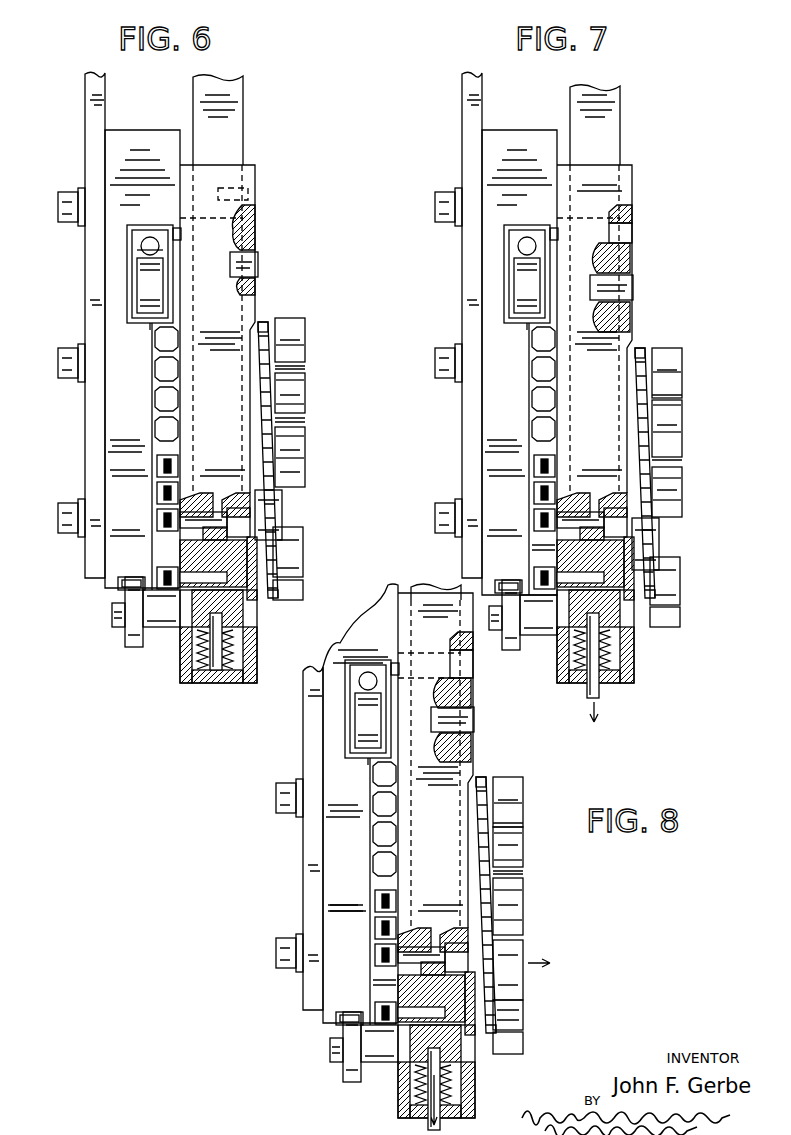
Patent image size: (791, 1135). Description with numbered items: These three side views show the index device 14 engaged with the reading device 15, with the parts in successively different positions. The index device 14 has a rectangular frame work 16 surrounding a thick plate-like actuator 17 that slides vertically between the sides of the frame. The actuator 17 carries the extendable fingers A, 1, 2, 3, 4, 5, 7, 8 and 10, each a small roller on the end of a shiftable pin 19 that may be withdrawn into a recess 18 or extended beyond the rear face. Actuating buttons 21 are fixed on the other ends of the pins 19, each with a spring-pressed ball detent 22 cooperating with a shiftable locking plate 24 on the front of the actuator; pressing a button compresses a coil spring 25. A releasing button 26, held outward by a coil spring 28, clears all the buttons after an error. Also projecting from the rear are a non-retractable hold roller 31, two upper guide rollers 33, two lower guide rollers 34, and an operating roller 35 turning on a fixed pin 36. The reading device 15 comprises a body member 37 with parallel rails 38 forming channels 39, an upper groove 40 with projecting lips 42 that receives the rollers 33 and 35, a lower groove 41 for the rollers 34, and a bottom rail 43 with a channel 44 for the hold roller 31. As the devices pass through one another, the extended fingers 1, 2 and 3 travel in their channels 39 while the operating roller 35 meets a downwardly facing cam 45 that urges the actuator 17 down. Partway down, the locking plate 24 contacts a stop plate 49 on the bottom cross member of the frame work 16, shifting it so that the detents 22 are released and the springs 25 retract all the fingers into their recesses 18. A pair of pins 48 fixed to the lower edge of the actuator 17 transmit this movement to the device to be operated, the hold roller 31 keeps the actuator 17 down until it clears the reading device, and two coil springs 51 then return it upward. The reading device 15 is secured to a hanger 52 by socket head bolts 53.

In FIG. 6, the extendable finger 1 is at (157, 521).
In FIG. 7, the extendable finger 1 is at (610, 539).
In FIG. 8, the extendable finger 1 is at (462, 970).
In FIG. 6, the extendable finger 2 is at (155, 490).
In FIG. 7, the extendable finger 2 is at (603, 505).
In FIG. 8, the extendable finger 2 is at (460, 935).
In FIG. 6, the extendable finger 3 is at (155, 464).
In FIG. 7, the extendable finger 3 is at (603, 483).
In FIG. 8, the extendable finger 3 is at (385, 901).
In FIG. 6, the extendable finger 4 is at (302, 458).
In FIG. 7, the extendable finger 4 is at (679, 486).
In FIG. 8, the extendable finger 4 is at (519, 917).
In FIG. 6, the extendable finger 5 is at (302, 436).
In FIG. 7, the extendable finger 5 is at (679, 462).
In FIG. 8, the extendable finger 5 is at (519, 885).
In FIG. 6, the extendable finger 7 is at (302, 405).
In FIG. 7, the extendable finger 7 is at (678, 428).
In FIG. 8, the extendable finger 7 is at (519, 858).
In FIG. 6, the extendable finger 8 is at (302, 380).
In FIG. 7, the extendable finger 8 is at (680, 398).
In FIG. 8, the extendable finger 8 is at (519, 830).
In FIG. 6, the extendable finger 10 is at (303, 350).
In FIG. 7, the extendable finger 10 is at (682, 370).
In FIG. 8, the extendable finger 10 is at (522, 800).
In FIG. 6, the index device 14 is at (265, 179).
In FIG. 7, the index device 14 is at (618, 289).
In FIG. 8, the index device 14 is at (455, 756).
In FIG. 6, the reading device 15 is at (140, 129).
In FIG. 7, the reading device 15 is at (519, 342).
In FIG. 8, the reading device 15 is at (356, 803).
In FIG. 6, the frame work 16 is at (204, 365).
In FIG. 7, the frame work 16 is at (573, 427).
In FIG. 8, the frame work 16 is at (430, 765).
In FIG. 6, the actuator 17 is at (256, 232).
In FIG. 7, the actuator 17 is at (631, 315).
In FIG. 8, the actuator 17 is at (467, 740).
In FIG. 6, the recess 18 is at (197, 494).
In FIG. 7, the recess 18 is at (573, 505).
In FIG. 8, the recess 18 is at (415, 942).
In FIG. 6, the shiftable pin 19 is at (233, 497).
In FIG. 7, the shiftable pin 19 is at (603, 516).
In FIG. 8, the shiftable pin 19 is at (444, 951).
In FIG. 6, the actuating button 21 is at (300, 339).
In FIG. 7, the actuating button 21 is at (698, 432).
In FIG. 8, the actuating button 21 is at (534, 852).
In FIG. 6, the spring-pressed ball detent 22 is at (276, 326).
In FIG. 7, the spring-pressed ball detent 22 is at (662, 337).
In FIG. 8, the spring-pressed ball detent 22 is at (503, 771).
In FIG. 6, the locking plate 24 is at (256, 287).
In FIG. 7, the locking plate 24 is at (654, 409).
In FIG. 8, the locking plate 24 is at (504, 848).
In FIG. 6, the coil spring 25 is at (260, 383).
In FIG. 7, the coil spring 25 is at (649, 470).
In FIG. 8, the coil spring 25 is at (463, 905).
In FIG. 6, the releasing button 26 is at (304, 593).
In FIG. 7, the releasing button 26 is at (685, 613).
In FIG. 8, the releasing button 26 is at (526, 1041).
In FIG. 6, the coil spring 28 is at (276, 599).
In FIG. 7, the coil spring 28 is at (667, 622).
In FIG. 8, the coil spring 28 is at (493, 1053).
In FIG. 6, the hold roller 31 is at (151, 624).
In FIG. 7, the hold roller 31 is at (538, 629).
In FIG. 8, the hold roller 31 is at (379, 1067).
In FIG. 6, the upper guide roller 33 is at (141, 293).
In FIG. 7, the upper guide roller 33 is at (527, 274).
In FIG. 8, the upper guide roller 33 is at (368, 709).
In FIG. 6, the lower guide roller 34 is at (130, 641).
In FIG. 7, the lower guide roller 34 is at (500, 626).
In FIG. 8, the lower guide roller 34 is at (329, 1049).
In FIG. 6, the operating roller 35 is at (130, 254).
In FIG. 6, the fixed pin 36 is at (258, 265).
In FIG. 7, the fixed pin 36 is at (634, 282).
In FIG. 8, the fixed pin 36 is at (474, 715).
In FIG. 6, the body member 37 is at (113, 415).
In FIG. 7, the body member 37 is at (509, 459).
In FIG. 8, the body member 37 is at (351, 891).
In FIG. 6, the rail 38 is at (113, 440).
In FIG. 7, the rail 38 is at (513, 420).
In FIG. 8, the rail 38 is at (354, 855).
In FIG. 6, the channel 39 is at (160, 368).
In FIG. 7, the channel 39 is at (525, 403).
In FIG. 8, the channel 39 is at (364, 826).
In FIG. 6, the groove 40 is at (150, 330).
In FIG. 7, the groove 40 is at (481, 323).
In FIG. 8, the groove 40 is at (318, 760).
In FIG. 6, the groove 41 is at (122, 588).
In FIG. 7, the groove 41 is at (476, 573).
In FIG. 8, the groove 41 is at (343, 1004).
In FIG. 6, the lip 42 is at (180, 231).
In FIG. 7, the lip 42 is at (564, 267).
In FIG. 8, the lip 42 is at (408, 665).
In FIG. 6, the bottom rail 43 is at (160, 577).
In FIG. 7, the bottom rail 43 is at (518, 570).
In FIG. 8, the bottom rail 43 is at (364, 994).
In FIG. 7, the channel 44 is at (530, 560).
In FIG. 8, the channel 44 is at (368, 964).
In FIG. 6, the cam 45 is at (140, 245).
In FIG. 7, the cam 45 is at (479, 245).
In FIG. 8, the cam 45 is at (322, 683).
In FIG. 6, the pin 48 is at (219, 672).
In FIG. 7, the pin 48 is at (619, 667).
In FIG. 8, the pin 48 is at (463, 1089).
In FIG. 6, the stop plate 49 is at (255, 645).
In FIG. 7, the stop plate 49 is at (614, 610).
In FIG. 8, the stop plate 49 is at (465, 1045).
In FIG. 6, the coil spring 51 is at (205, 642).
In FIG. 7, the coil spring 51 is at (623, 658).
In FIG. 8, the coil spring 51 is at (467, 1084).
In FIG. 6, the hanger 52 is at (85, 118).
In FIG. 7, the hanger 52 is at (448, 325).
In FIG. 8, the hanger 52 is at (292, 838).
In FIG. 6, the socket head bolt 53 is at (66, 199).
In FIG. 7, the socket head bolt 53 is at (438, 349).
In FIG. 8, the socket head bolt 53 is at (281, 875).
In FIG. 6, the extendable finger A is at (303, 559).
In FIG. 7, the extendable finger A is at (677, 581).
In FIG. 8, the extendable finger A is at (519, 1015).